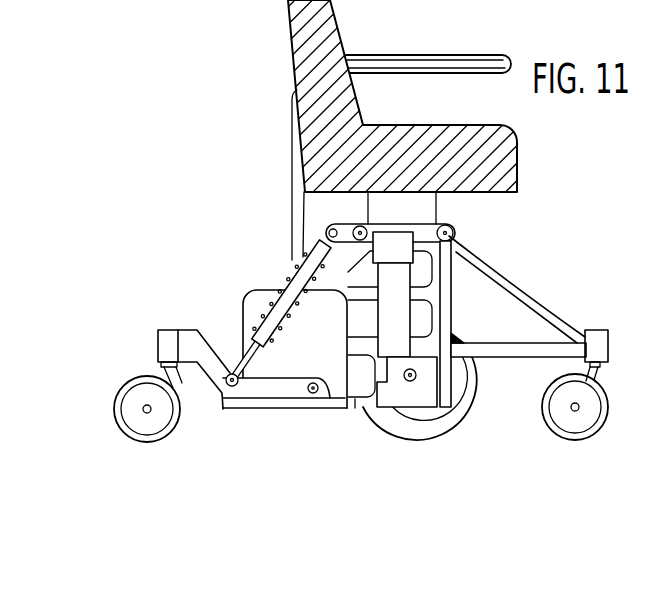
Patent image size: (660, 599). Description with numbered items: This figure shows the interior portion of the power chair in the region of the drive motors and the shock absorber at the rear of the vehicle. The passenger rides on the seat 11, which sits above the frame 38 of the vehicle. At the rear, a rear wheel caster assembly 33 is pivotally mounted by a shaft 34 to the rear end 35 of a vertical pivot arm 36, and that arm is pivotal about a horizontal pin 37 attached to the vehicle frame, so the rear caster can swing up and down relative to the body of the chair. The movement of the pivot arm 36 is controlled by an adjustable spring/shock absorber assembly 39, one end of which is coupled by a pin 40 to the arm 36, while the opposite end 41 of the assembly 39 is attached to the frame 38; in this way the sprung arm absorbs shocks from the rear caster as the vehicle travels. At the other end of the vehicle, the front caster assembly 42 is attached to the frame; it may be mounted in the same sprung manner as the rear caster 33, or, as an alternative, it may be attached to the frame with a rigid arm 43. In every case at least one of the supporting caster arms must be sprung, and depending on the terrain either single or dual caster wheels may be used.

The seat 11 is at (518, 138).
The rear wheel caster assembly 33 is at (114, 412).
The shaft 34 is at (157, 366).
The rear end of pivot arm 35 is at (168, 338).
The vertical pivot arm 36 is at (287, 389).
The horizontal pin 37 is at (314, 378).
The frame 38 is at (354, 408).
The adjustable spring/shock absorber assembly 39 is at (255, 399).
The pin 40 is at (218, 396).
The opposite end of spring/shock absorber assembly 41 is at (328, 236).
The front caster assembly 42 is at (608, 413).
The rigid arm 43 is at (522, 307).